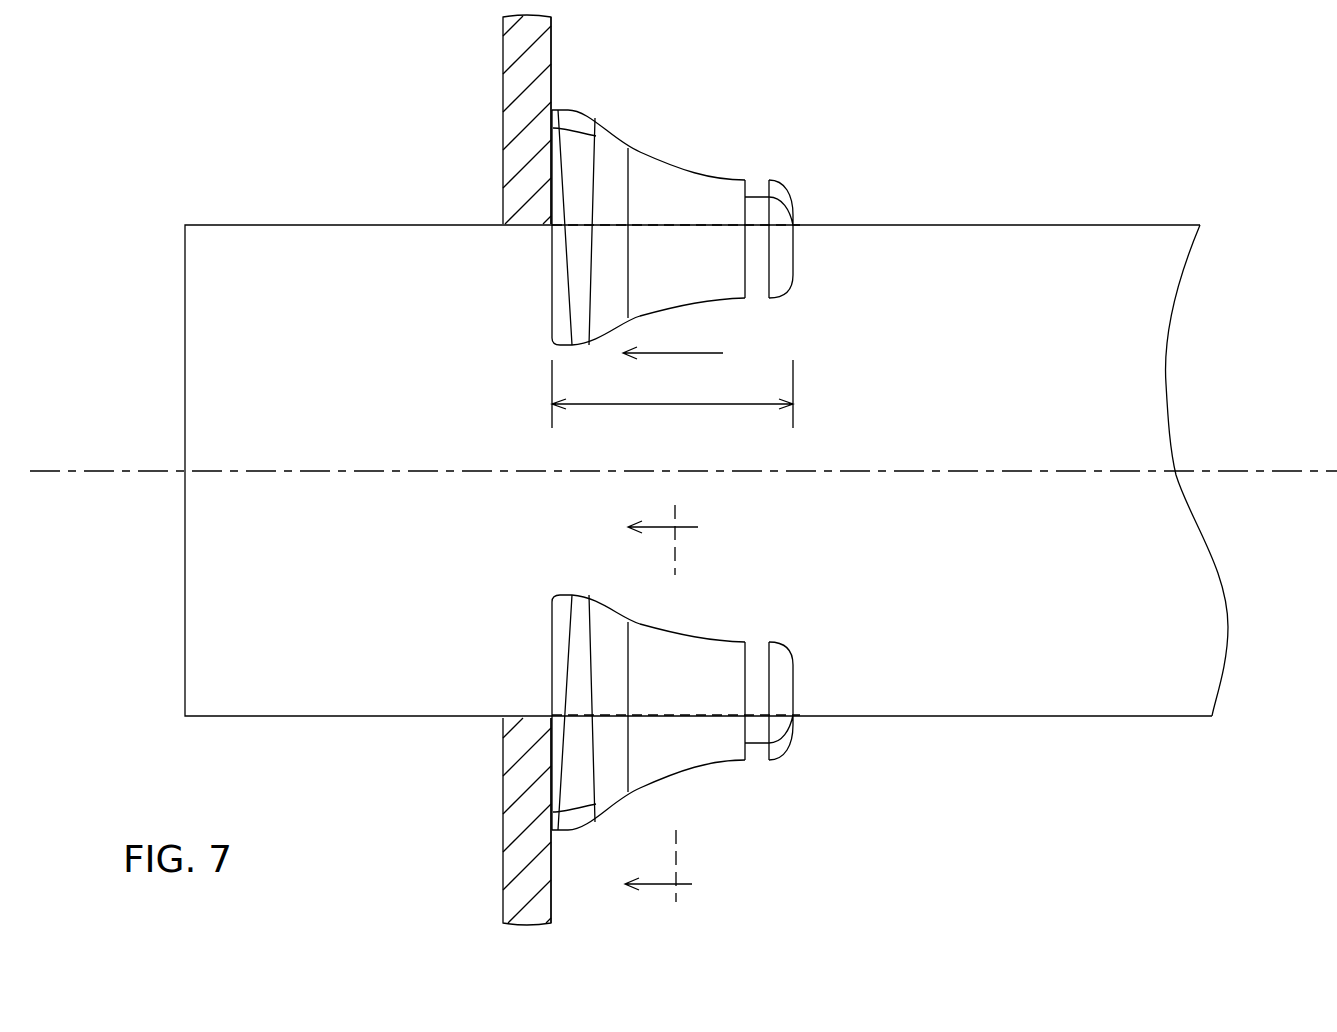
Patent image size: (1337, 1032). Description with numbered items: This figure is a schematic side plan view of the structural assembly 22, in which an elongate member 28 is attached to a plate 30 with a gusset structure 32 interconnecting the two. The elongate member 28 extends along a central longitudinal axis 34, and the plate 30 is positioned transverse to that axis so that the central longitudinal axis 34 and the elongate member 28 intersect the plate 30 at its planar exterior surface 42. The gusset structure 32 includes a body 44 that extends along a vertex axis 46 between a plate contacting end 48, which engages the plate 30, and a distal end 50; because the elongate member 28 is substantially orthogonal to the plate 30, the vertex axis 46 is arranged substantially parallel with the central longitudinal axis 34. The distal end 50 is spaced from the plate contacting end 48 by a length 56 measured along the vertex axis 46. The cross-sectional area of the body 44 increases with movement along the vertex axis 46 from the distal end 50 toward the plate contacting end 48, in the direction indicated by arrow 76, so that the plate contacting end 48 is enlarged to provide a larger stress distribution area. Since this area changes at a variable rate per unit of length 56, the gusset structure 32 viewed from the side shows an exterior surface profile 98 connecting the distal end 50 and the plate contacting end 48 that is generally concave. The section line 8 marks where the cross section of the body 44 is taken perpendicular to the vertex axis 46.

The section line 8 is at (661, 707).
The structural assembly 22 is at (651, 450).
The elongate member 28 is at (1003, 225).
The plate 30 is at (522, 38).
The gusset structure 32 is at (657, 152).
The central longitudinal axis 34 is at (1282, 470).
The planar exterior surface 42 is at (553, 82).
The body 44 is at (727, 193).
The vertex axis 46 is at (665, 228).
The plate contacting end 48 is at (552, 300).
The distal end 50 is at (793, 248).
The length 56 is at (667, 406).
The arrow 76 is at (672, 353).
The exterior surface profile 98 is at (613, 134).